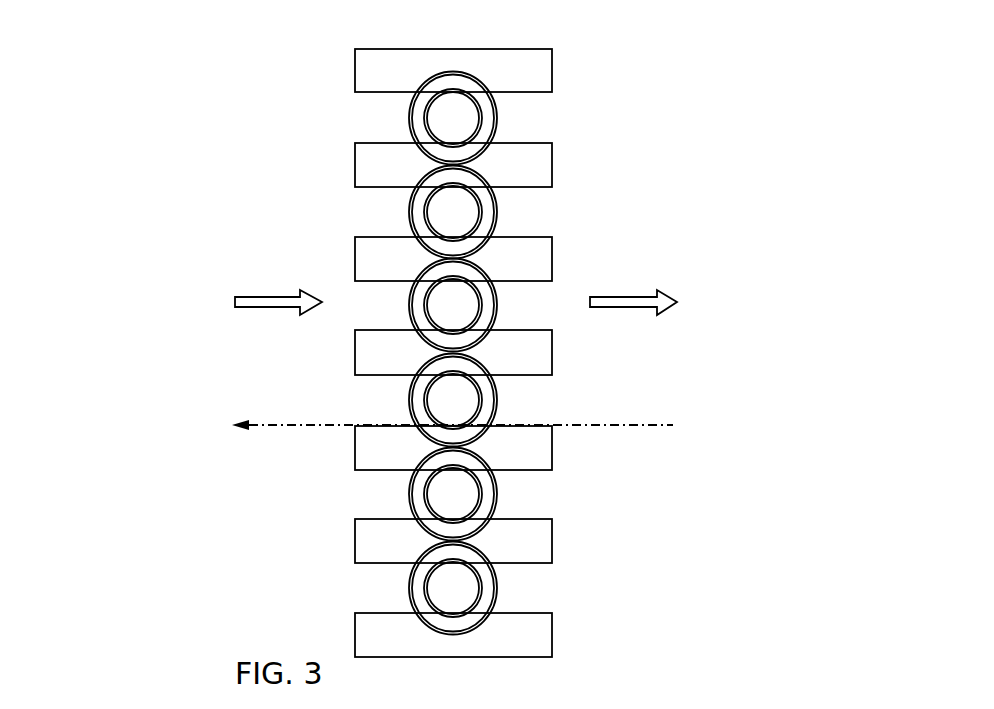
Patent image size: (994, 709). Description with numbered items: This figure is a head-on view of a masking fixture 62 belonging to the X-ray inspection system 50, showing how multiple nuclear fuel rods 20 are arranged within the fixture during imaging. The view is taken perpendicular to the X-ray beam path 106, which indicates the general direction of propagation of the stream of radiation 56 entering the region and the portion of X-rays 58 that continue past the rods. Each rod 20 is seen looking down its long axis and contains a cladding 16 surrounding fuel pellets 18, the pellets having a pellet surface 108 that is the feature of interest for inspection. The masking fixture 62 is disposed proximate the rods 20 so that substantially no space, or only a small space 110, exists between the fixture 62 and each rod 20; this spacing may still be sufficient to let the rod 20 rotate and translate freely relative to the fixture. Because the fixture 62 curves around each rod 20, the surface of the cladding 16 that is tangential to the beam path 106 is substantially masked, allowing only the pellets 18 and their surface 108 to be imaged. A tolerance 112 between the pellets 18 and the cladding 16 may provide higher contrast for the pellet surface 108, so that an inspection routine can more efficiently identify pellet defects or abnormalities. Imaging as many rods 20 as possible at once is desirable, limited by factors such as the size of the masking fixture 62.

The system 50 is at (292, 55).
The masking fixture 62 is at (553, 62).
The fuel rod 20 is at (399, 222).
The cladding 16 is at (495, 127).
The space 110 is at (452, 72).
The pellet surface 108 is at (485, 118).
The tolerance 112 is at (425, 119).
The fuel pellets 18 is at (440, 108).
The stream of radiation 56 is at (258, 297).
The portion of X-rays 58 is at (635, 297).
The X-ray beam path 106 is at (617, 425).